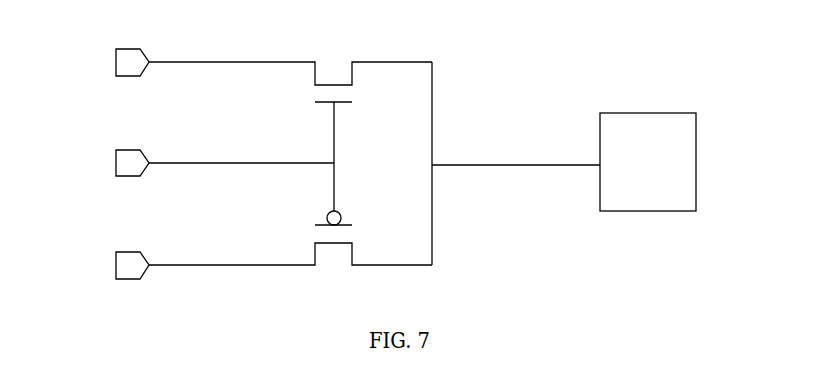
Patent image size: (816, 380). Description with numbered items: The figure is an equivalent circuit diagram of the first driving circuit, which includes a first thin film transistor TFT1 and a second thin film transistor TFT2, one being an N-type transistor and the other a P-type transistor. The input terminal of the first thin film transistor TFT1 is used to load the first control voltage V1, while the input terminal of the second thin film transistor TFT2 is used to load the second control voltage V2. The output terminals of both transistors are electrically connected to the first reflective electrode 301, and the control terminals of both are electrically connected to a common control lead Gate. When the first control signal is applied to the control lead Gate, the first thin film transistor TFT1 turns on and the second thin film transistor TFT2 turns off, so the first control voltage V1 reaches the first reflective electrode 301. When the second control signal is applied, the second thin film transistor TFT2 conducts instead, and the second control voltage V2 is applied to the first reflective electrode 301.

The first reflective electrode 301 is at (564, 162).
The first thin film transistor TFT1 is at (290, 100).
The second thin film transistor TFT2 is at (290, 228).
The first control voltage V1 is at (116, 62).
The second control voltage V2 is at (116, 265).
The control lead Gate is at (225, 159).